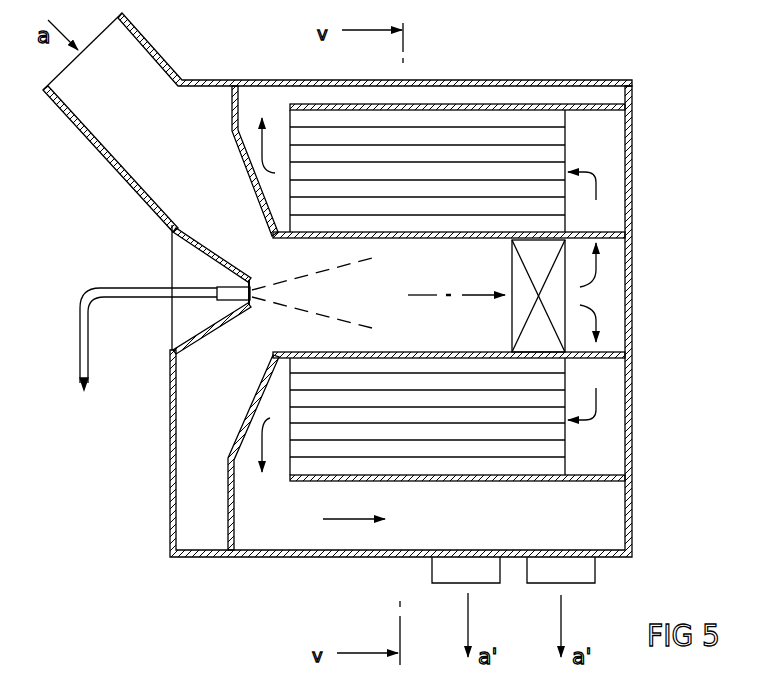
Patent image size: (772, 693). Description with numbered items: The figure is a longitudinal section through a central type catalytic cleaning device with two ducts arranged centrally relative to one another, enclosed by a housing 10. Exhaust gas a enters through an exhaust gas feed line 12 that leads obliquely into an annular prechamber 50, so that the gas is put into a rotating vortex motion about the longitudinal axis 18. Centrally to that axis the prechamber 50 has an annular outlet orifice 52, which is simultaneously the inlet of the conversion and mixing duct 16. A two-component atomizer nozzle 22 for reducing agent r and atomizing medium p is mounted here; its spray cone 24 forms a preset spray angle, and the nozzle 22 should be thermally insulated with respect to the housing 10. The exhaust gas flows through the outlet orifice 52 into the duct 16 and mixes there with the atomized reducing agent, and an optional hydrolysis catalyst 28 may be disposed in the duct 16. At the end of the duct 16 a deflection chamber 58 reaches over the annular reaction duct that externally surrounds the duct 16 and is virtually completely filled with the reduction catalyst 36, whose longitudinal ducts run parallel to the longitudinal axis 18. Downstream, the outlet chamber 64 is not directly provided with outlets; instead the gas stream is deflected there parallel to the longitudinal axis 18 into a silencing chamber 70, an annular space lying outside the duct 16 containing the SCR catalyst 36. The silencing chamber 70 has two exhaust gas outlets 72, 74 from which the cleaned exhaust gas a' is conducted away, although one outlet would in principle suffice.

The housing 10 is at (290, 80).
The exhaust gas feed line 12 is at (157, 43).
The conversion and mixing duct 16 is at (440, 342).
The longitudinal axis 18 is at (430, 295).
The two-component atomizer nozzle 22 is at (227, 288).
The spray cone 24 is at (298, 270).
The hydrolysis catalyst 28 is at (512, 265).
The reduction catalyst 36 is at (500, 135).
The annular prechamber 50 is at (205, 507).
The annular outlet orifice 52 is at (260, 333).
The deflection chamber 58 is at (608, 210).
The outlet chamber 64 is at (248, 530).
The silencing chamber 70 is at (350, 535).
The exhaust gas outlet 72 is at (443, 570).
The exhaust gas outlet 74 is at (585, 574).